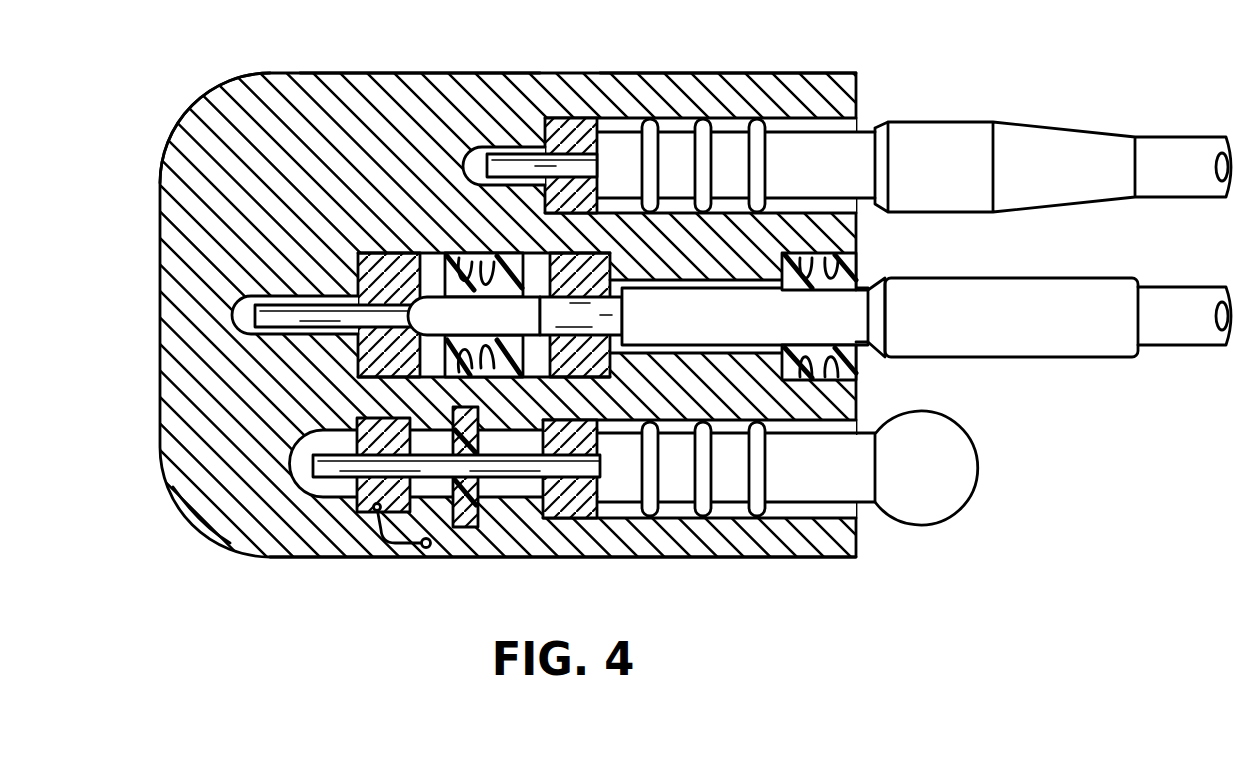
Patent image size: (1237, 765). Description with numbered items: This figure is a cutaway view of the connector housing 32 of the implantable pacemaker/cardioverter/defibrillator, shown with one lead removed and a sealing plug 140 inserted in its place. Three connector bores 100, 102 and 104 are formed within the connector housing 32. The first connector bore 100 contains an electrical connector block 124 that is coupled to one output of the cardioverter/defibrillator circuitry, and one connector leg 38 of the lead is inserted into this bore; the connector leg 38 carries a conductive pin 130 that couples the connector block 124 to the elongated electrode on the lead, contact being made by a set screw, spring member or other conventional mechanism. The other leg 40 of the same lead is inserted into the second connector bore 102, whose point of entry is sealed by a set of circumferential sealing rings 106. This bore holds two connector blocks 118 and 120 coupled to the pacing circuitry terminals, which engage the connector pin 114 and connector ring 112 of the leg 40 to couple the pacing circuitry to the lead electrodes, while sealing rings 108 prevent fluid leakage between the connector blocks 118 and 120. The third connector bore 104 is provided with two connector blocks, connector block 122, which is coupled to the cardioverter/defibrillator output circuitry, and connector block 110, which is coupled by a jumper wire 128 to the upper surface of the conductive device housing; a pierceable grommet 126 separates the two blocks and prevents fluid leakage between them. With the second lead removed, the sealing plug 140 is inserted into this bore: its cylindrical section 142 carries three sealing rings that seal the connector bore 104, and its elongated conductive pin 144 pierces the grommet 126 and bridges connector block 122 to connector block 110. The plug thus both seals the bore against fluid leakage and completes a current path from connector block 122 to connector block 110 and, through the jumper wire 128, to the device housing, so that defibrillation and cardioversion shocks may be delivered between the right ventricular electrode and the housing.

The connector housing 32 is at (713, 74).
The connector leg 38 is at (943, 135).
The leg 40 is at (1015, 313).
The connector bore 100 is at (800, 118).
The connector bore 102 is at (660, 282).
The connector bore 104 is at (762, 555).
The circumferential sealing rings 106 is at (845, 268).
The sealing rings 108 is at (463, 263).
The connector block 110 is at (362, 505).
The connector ring 112 is at (620, 320).
The connector pin 114 is at (288, 320).
The connector block 118 is at (312, 183).
The connector block 120 is at (440, 150).
The connector block 122 is at (570, 517).
The electrical connector block 124 is at (580, 128).
The pierceable grommet 126 is at (466, 515).
The jumper wire 128 is at (400, 546).
The conductive pin 130 is at (472, 150).
The sealing plug 140 is at (930, 477).
The cylindrical section 142 is at (673, 487).
The elongated conductive pin 144 is at (325, 478).